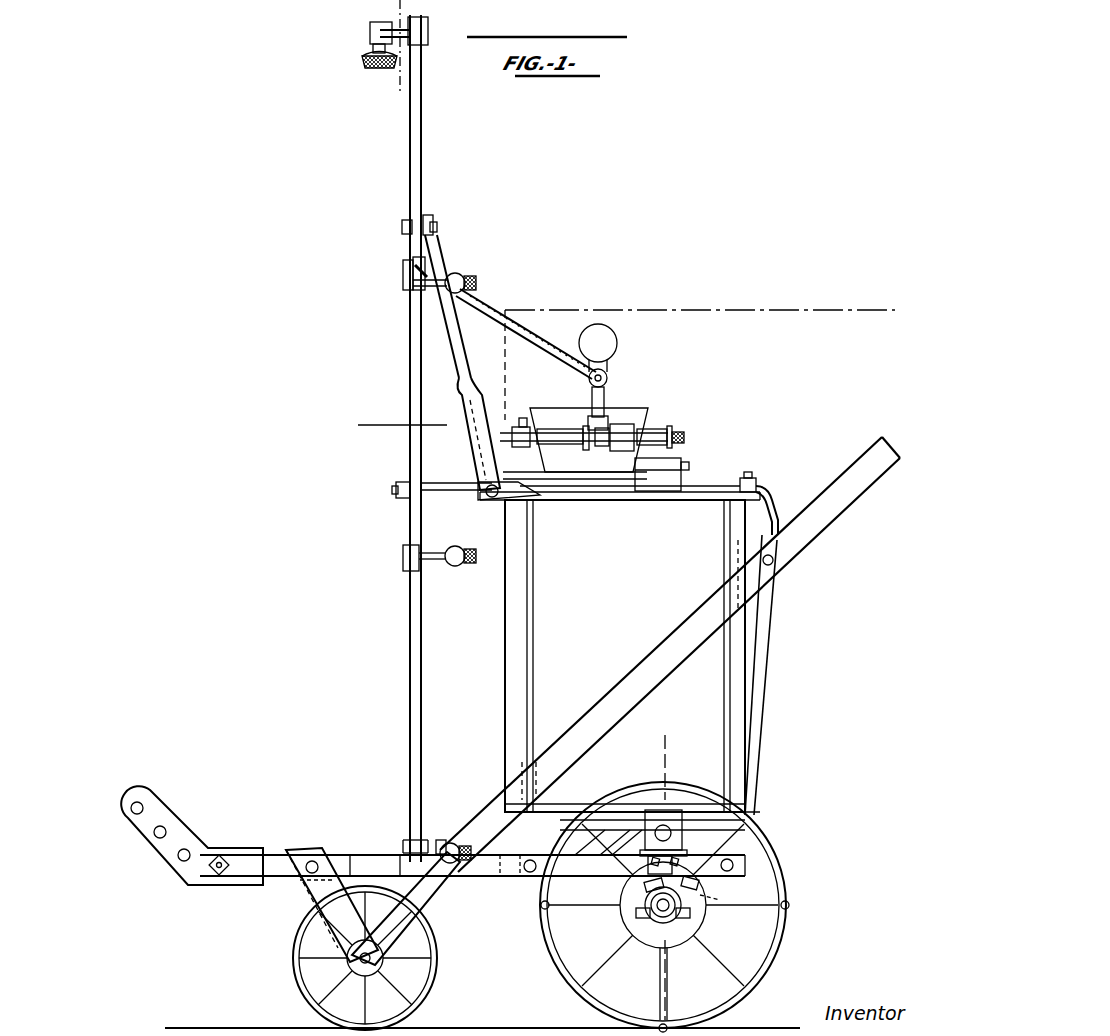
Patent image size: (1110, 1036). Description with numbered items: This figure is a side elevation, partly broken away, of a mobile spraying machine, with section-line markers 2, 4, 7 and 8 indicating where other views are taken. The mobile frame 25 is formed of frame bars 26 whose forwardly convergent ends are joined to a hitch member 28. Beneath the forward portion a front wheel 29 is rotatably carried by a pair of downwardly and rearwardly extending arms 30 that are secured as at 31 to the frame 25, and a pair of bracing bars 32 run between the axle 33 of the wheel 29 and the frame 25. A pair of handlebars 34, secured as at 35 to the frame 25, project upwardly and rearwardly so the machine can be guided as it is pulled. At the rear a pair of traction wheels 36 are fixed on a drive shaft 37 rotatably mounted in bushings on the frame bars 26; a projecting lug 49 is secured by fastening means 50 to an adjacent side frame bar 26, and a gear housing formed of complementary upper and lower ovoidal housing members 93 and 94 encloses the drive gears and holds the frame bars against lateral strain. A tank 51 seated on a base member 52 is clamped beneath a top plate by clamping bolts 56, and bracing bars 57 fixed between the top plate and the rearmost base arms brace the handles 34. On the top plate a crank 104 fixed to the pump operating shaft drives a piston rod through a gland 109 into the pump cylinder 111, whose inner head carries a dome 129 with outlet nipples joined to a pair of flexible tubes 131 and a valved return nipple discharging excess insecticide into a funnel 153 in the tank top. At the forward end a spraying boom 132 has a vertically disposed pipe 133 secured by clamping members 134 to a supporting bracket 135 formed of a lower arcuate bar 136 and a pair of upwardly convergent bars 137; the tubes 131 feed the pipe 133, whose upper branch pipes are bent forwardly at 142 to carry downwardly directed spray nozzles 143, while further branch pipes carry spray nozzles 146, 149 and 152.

The section line 2- 2 is at (881, 342).
The section line 4- 4 is at (667, 980).
The section line 7- 7 is at (410, 248).
The section line 8- 8 is at (402, 72).
The mobile frame 25 is at (349, 852).
The frame bars 26 is at (507, 870).
The hitch member 28 is at (198, 846).
The front wheel 29 is at (296, 978).
The arms 30 is at (336, 914).
The securing point 31 is at (312, 858).
The bracing bars 32 is at (425, 910).
The axle 33 is at (380, 970).
The handlebars 34 is at (833, 506).
The securing point 35 is at (455, 878).
The traction wheels 36 is at (780, 843).
The drive shaft 37 is at (675, 912).
The projecting lug 49 is at (645, 884).
The fastening means 50 is at (642, 859).
The tank 51 is at (520, 630).
The base member 52 is at (598, 812).
The clamping bolts 56 is at (536, 642).
The bracing bars 57 is at (770, 520).
The upper housing member 93 is at (702, 892).
The lower housing member 94 is at (665, 945).
The crank 104 is at (682, 462).
The gland 109 is at (627, 430).
The pump cylinder 111 is at (566, 425).
The dome 129 is at (617, 345).
The flexible tubes 131 is at (523, 316).
The spraying boom 132 is at (408, 160).
The vertically disposed pipe 133 is at (410, 347).
The clamping members 134 is at (410, 482).
The supporting bracket 135 is at (448, 360).
The lower arcuate bar 136 is at (410, 505).
The upwardly convergent bars 137 is at (466, 347).
The forwardly bent ends 142 is at (372, 33).
The spray nozzles 143 is at (366, 53).
The spray nozzles 146 is at (460, 274).
The spray nozzles 149 is at (460, 842).
The spray nozzles 152 is at (456, 568).
The funnel 153 is at (662, 420).